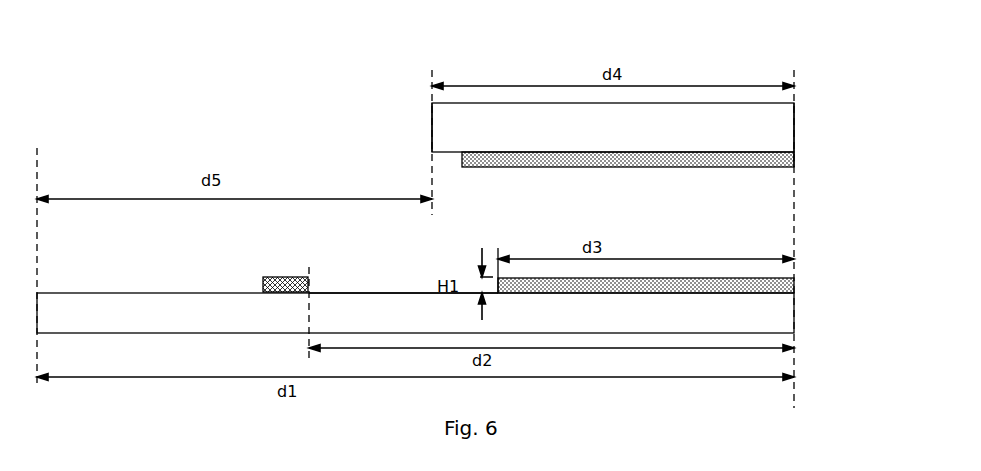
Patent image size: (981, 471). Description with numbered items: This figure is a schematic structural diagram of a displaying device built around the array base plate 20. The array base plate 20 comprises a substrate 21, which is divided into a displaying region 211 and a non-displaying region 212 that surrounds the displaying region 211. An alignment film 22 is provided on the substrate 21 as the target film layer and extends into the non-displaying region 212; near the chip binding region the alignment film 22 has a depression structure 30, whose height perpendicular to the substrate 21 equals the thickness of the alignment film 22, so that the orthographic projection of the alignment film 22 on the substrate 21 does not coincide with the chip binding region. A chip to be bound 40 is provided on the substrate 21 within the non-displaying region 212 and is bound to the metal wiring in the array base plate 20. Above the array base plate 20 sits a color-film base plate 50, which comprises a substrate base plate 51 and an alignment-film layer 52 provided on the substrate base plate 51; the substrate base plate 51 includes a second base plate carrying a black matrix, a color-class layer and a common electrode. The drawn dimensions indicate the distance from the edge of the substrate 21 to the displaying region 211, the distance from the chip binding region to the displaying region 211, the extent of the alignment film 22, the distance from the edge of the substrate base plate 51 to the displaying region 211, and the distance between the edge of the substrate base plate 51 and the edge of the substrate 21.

The array base plate 20 is at (465, 290).
The substrate 21 is at (778, 320).
The alignment film 22 is at (793, 277).
The depression structure 30 is at (477, 287).
The chip to be bound 40 is at (290, 276).
The color-film base plate 50 is at (660, 127).
The substrate base plate 51 is at (772, 128).
The alignment-film layer 52 is at (770, 165).
The displaying region 211 is at (822, 71).
The non-displaying region 212 is at (380, 95).